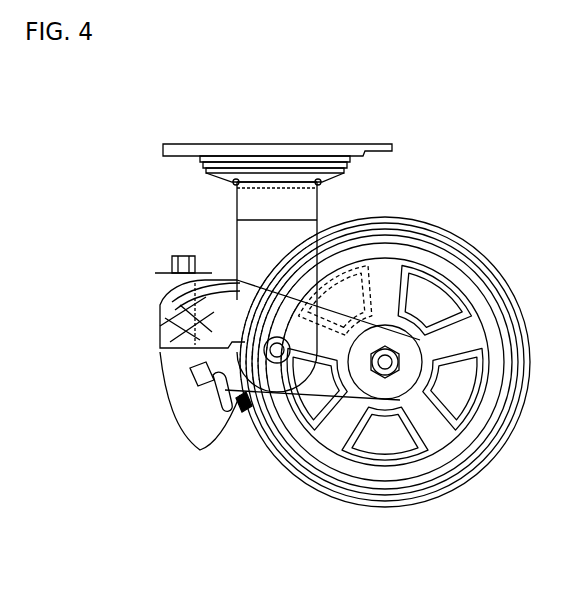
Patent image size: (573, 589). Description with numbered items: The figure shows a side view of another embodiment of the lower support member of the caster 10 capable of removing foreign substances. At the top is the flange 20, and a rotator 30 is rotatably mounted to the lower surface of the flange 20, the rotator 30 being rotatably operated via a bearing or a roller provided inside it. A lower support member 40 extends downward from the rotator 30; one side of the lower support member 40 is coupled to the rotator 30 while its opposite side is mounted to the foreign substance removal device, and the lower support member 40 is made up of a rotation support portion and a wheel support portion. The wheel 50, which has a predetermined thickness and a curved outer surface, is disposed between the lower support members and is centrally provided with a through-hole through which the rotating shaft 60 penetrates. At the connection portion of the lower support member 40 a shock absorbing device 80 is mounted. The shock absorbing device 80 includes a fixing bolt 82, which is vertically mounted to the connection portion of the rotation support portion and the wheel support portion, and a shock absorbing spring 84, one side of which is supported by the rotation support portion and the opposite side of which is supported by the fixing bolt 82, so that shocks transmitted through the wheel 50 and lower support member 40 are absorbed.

The caster 10 is at (389, 90).
The flange 20 is at (392, 150).
The rotator 30 is at (345, 166).
The lower support member 40 is at (237, 236).
The wheel 50 is at (462, 470).
The rotating shaft 60 is at (385, 372).
The shock absorbing device 80 is at (145, 350).
The fixing bolt 82 is at (168, 266).
The shock absorbing spring 84 is at (162, 328).